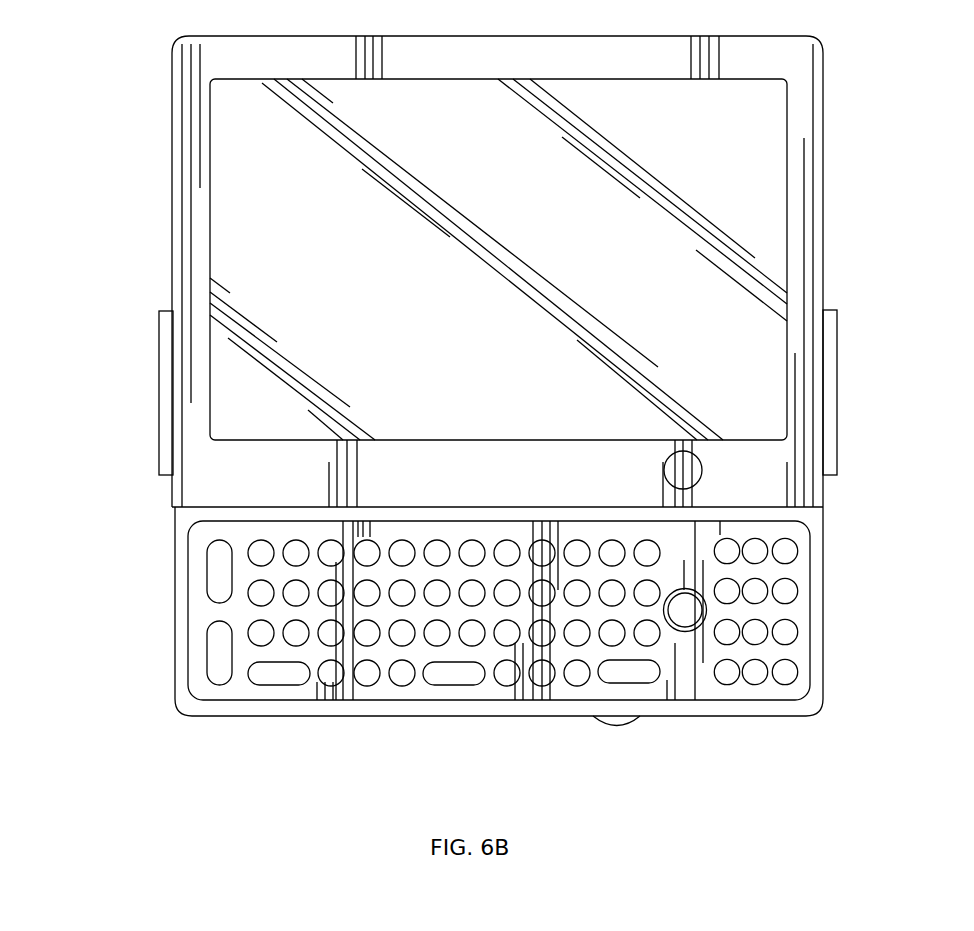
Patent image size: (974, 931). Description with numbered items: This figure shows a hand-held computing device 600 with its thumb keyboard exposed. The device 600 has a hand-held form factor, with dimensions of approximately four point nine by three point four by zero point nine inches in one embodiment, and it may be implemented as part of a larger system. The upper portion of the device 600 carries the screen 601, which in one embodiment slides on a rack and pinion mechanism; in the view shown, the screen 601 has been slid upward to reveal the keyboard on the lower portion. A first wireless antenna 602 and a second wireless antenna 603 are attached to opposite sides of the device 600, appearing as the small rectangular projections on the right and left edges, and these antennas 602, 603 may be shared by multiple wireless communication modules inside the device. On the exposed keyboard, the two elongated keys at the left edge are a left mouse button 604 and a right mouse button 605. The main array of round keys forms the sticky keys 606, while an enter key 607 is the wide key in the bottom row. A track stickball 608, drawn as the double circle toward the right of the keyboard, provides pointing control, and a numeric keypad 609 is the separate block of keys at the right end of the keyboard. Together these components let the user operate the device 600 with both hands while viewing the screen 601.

The hand-held device 600 is at (961, 178).
The screen 601 is at (770, 262).
The first wireless antenna 602 is at (837, 389).
The second wireless antenna 603 is at (168, 404).
The left mouse button 604 is at (215, 593).
The right mouse button 605 is at (215, 675).
The sticky keys 606 is at (415, 723).
The enter key 607 is at (628, 686).
The track stickball 608 is at (685, 632).
The numeric keypad 609 is at (797, 723).